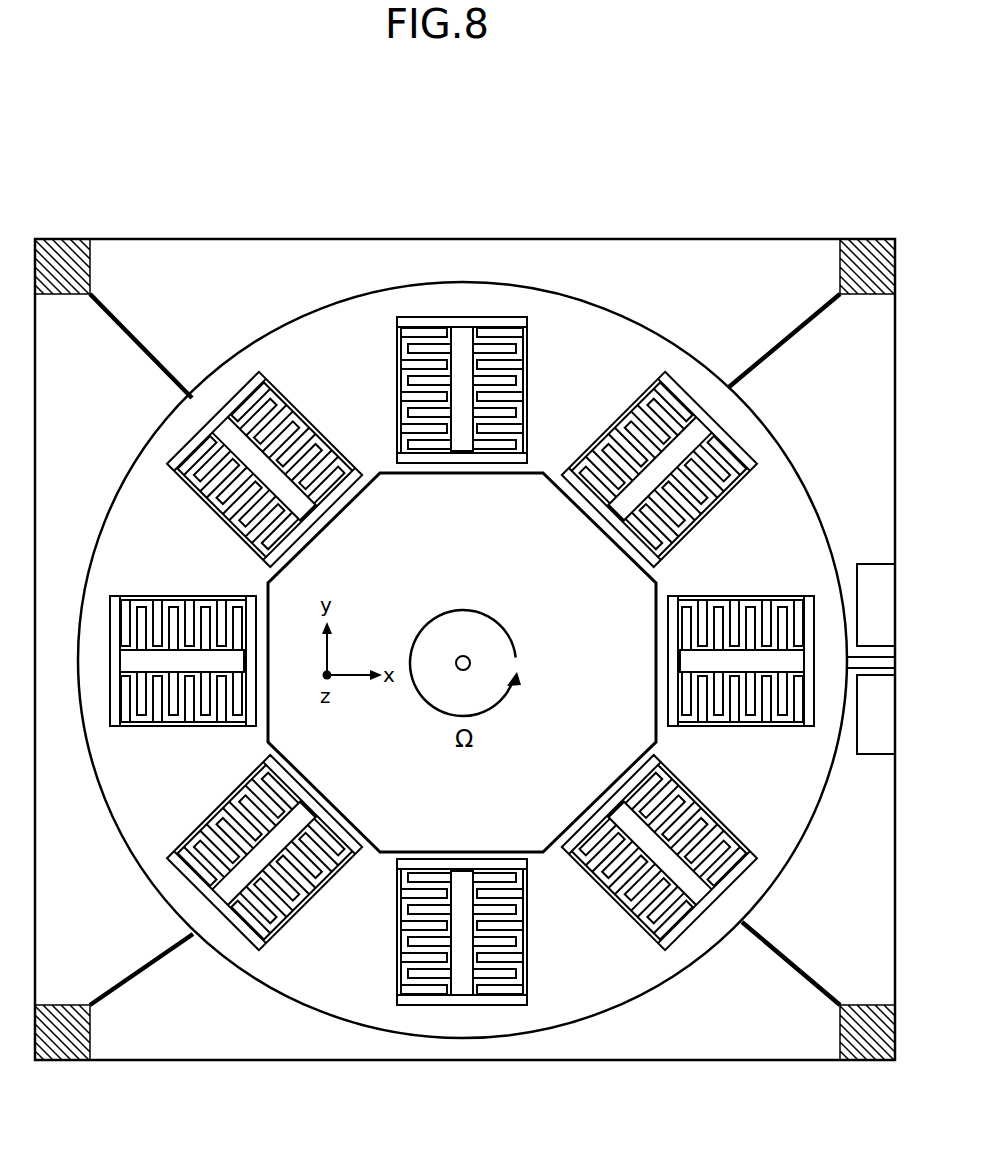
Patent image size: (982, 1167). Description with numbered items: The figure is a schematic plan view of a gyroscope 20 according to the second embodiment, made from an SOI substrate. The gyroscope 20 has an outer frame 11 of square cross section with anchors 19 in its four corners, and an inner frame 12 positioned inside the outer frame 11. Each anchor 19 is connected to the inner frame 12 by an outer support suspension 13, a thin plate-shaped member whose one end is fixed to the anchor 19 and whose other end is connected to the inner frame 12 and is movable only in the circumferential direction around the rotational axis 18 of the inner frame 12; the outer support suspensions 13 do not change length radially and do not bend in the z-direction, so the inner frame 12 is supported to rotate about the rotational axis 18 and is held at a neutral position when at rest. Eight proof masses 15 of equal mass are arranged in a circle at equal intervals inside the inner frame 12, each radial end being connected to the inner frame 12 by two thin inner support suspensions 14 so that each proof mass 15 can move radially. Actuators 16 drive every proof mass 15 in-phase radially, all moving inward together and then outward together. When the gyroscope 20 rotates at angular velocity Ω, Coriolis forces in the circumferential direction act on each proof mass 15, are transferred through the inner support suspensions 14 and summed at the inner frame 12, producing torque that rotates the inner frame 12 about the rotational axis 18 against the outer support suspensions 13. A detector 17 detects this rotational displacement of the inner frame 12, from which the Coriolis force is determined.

The outer frame 11 is at (650, 238).
The inner frame 12 is at (780, 438).
The outer support suspension 13 is at (145, 340).
The inner support suspension 14 is at (492, 318).
The proof mass 15 is at (403, 322).
The actuator 16 is at (525, 372).
The detector 17 is at (875, 593).
The rotational axis 18 is at (467, 655).
The anchor 19 is at (58, 253).
The gyroscope 20 is at (443, 165).